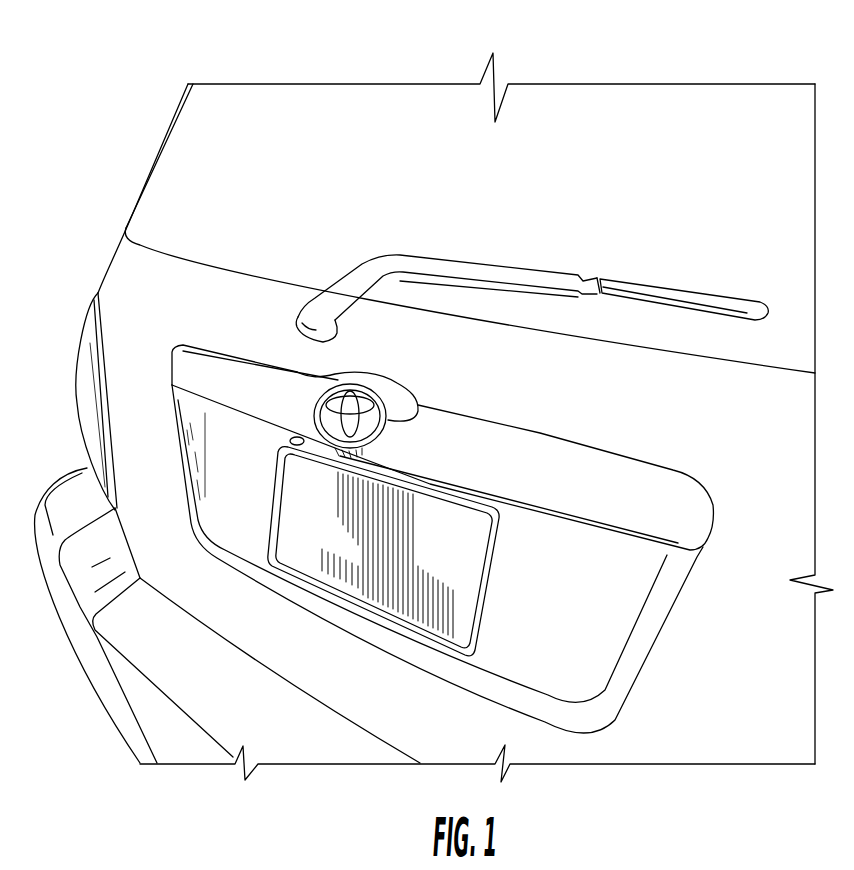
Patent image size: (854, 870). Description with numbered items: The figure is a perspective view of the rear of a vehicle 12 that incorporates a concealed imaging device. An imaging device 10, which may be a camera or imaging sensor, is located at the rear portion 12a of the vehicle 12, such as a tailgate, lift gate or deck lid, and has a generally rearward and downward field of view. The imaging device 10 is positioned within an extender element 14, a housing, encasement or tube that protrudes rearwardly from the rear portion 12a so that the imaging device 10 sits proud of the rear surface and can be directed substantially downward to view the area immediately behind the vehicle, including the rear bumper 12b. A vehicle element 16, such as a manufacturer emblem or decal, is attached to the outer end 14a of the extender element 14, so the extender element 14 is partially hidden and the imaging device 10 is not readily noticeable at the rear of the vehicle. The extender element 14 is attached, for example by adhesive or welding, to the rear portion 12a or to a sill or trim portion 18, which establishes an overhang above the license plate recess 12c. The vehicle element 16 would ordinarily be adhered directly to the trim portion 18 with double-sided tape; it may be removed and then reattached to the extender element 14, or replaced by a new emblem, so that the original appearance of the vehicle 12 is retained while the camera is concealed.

The imaging device 10 is at (293, 437).
The vehicle 12 is at (240, 80).
The rear portion 12a is at (548, 387).
The rear bumper 12b is at (123, 697).
The license plate recess 12c is at (552, 592).
The extender element 14 is at (378, 443).
The outer end 14a is at (330, 418).
The vehicle element 16 is at (390, 420).
The trim portion 18 is at (580, 462).